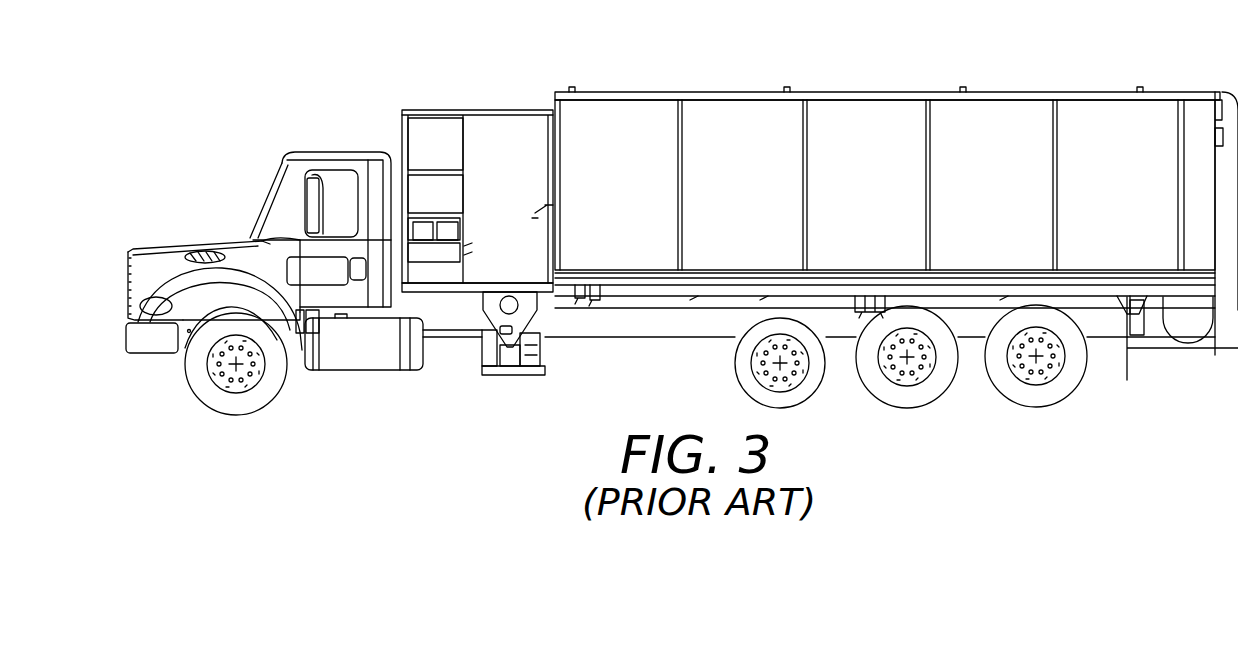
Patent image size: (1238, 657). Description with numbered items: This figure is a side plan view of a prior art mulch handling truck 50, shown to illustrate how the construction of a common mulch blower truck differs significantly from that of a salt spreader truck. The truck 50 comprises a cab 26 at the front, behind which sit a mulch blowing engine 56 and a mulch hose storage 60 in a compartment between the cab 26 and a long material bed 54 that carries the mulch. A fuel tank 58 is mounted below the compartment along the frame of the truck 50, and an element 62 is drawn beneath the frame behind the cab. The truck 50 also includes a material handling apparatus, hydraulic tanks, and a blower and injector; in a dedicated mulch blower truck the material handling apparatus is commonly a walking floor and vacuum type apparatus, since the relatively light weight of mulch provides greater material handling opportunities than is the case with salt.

The truck 50 is at (192, 105).
The cab 26 is at (320, 150).
The material bed 54 is at (1003, 122).
The mulch blowing engine 56 is at (462, 237).
The fuel tank 58 is at (348, 372).
The mulch hose storage 60 is at (447, 204).
The hitch assembly 62 is at (507, 368).